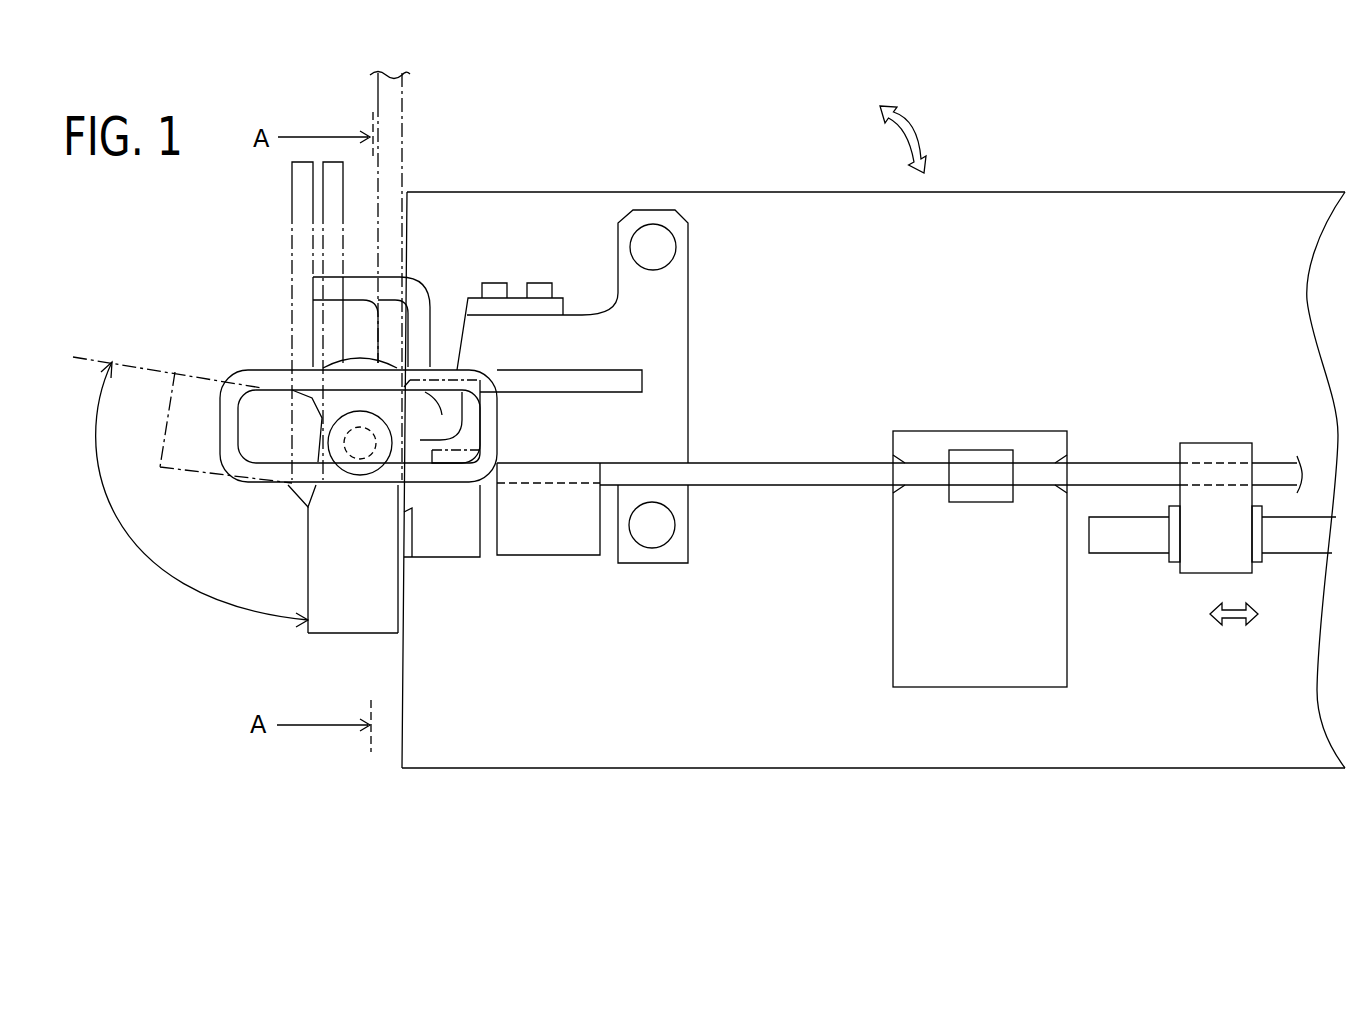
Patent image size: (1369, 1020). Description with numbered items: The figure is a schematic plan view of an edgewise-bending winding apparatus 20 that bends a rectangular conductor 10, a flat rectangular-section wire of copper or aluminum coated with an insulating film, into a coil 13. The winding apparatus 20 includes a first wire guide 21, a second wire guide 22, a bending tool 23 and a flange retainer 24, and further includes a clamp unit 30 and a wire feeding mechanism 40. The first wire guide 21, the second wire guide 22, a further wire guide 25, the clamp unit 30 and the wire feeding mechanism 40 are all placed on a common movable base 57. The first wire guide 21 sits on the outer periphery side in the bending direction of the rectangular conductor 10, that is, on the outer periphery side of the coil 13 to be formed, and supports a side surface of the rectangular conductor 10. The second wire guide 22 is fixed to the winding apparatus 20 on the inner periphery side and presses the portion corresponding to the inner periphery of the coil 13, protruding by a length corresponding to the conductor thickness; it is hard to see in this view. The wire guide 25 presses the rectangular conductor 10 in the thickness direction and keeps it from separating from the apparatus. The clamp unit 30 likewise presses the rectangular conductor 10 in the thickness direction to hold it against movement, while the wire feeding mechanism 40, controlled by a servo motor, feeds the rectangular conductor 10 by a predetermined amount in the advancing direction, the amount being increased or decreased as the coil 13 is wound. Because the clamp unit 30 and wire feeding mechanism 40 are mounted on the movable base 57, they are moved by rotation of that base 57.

The rectangular conductor 10 is at (772, 466).
The coil 13 is at (236, 380).
The edgewise-bending winding apparatus 20 is at (524, 574).
The first wire guide 21 is at (420, 537).
The second wire guide 22 is at (417, 440).
The bending tool 23 is at (340, 627).
The flange retainer 24 is at (350, 455).
The wire guide 25 is at (582, 540).
The clamp unit 30 is at (967, 670).
The wire feeding mechanism 40 is at (1198, 569).
The movable base 57 is at (1092, 221).